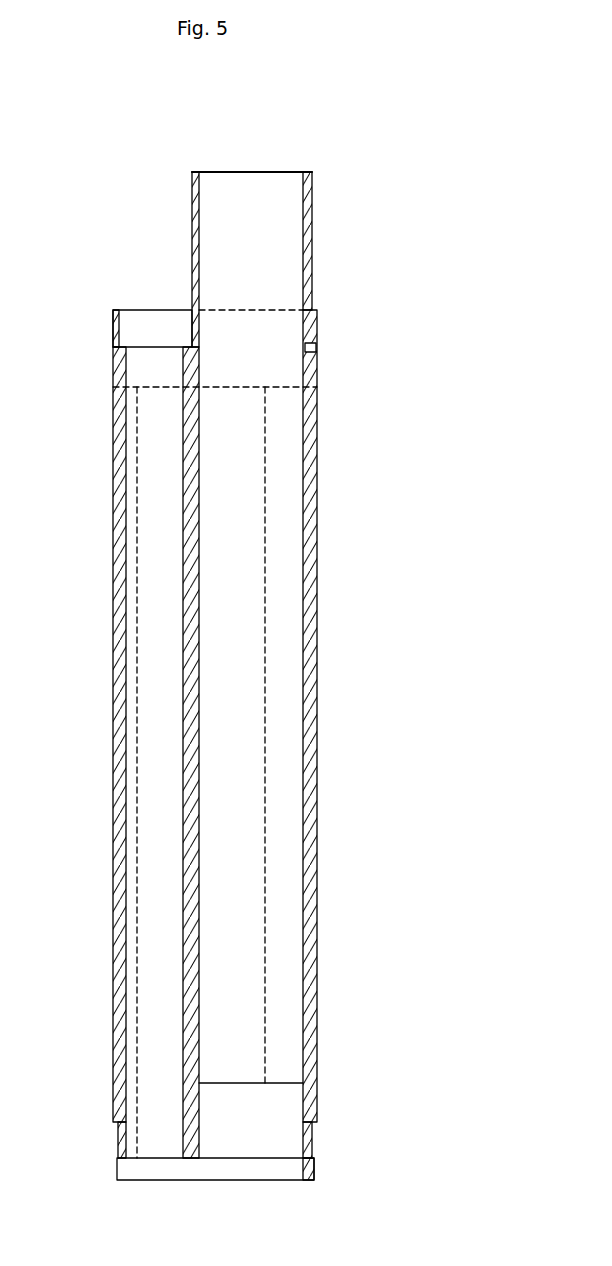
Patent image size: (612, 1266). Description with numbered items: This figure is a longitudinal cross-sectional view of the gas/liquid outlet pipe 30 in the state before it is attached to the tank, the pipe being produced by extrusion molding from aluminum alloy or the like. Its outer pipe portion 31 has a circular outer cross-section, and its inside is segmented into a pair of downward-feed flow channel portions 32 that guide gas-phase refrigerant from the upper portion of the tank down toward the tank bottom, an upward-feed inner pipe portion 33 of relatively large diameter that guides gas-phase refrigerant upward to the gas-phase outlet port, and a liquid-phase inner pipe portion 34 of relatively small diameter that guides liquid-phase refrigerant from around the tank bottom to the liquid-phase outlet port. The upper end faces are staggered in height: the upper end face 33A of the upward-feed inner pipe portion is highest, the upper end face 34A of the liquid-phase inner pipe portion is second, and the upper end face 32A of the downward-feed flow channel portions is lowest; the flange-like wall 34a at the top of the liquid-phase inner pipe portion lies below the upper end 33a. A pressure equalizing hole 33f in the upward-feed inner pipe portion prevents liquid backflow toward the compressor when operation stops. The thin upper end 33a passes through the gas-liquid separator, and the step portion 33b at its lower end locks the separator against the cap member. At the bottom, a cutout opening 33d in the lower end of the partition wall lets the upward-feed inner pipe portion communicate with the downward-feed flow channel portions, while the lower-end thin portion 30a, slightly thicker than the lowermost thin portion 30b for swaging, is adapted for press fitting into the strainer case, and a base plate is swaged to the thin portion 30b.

The gas/liquid outlet pipe 30 is at (244, 725).
The outer pipe portion 31 is at (327, 477).
The lower-end thin portion 30a is at (317, 1133).
The thin portion for swaging 30b is at (314, 1174).
The downward-feed flow channel portion 32 is at (261, 752).
The upper end face of downward-feed flow channel portion 32A is at (243, 380).
The upward-feed inner pipe portion 33 is at (269, 645).
The upper end face of upward-feed inner pipe portion 33A is at (193, 171).
The upper end of upward-feed inner pipe portion 33a is at (305, 222).
The step portion 33b is at (312, 310).
The cutout opening 33d is at (238, 1082).
The pressure equalizing hole 33f is at (317, 350).
The liquid-phase inner pipe portion 34 is at (117, 691).
The upper end face of liquid-phase inner pipe portion 34A is at (117, 304).
The flange wall 34a is at (115, 328).